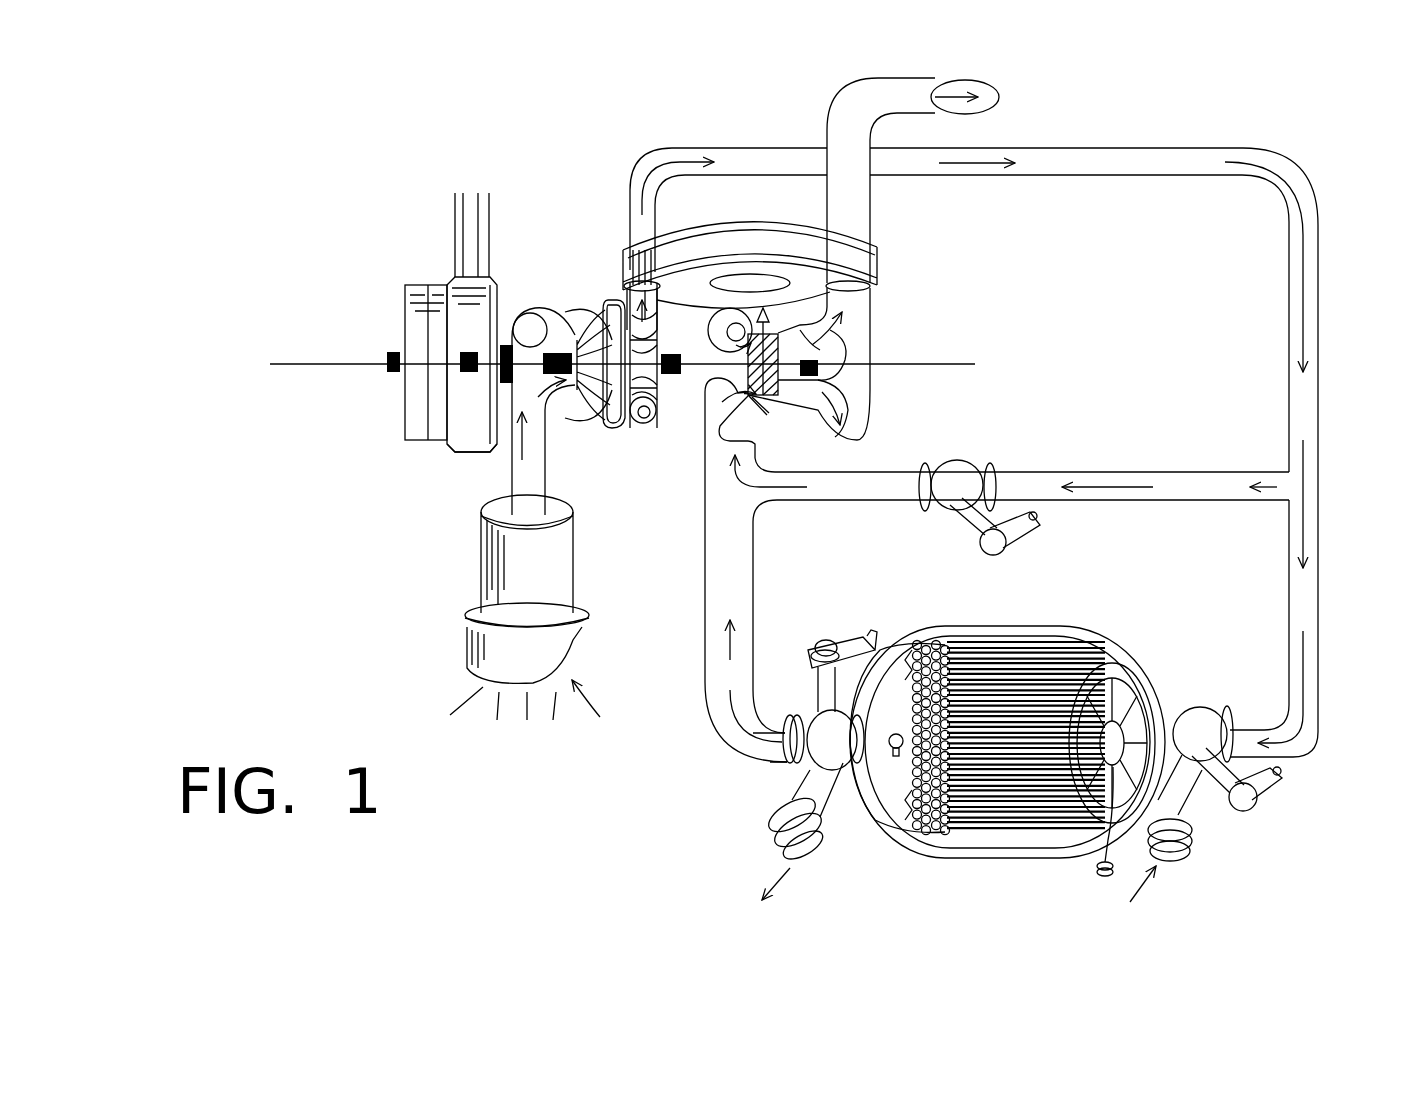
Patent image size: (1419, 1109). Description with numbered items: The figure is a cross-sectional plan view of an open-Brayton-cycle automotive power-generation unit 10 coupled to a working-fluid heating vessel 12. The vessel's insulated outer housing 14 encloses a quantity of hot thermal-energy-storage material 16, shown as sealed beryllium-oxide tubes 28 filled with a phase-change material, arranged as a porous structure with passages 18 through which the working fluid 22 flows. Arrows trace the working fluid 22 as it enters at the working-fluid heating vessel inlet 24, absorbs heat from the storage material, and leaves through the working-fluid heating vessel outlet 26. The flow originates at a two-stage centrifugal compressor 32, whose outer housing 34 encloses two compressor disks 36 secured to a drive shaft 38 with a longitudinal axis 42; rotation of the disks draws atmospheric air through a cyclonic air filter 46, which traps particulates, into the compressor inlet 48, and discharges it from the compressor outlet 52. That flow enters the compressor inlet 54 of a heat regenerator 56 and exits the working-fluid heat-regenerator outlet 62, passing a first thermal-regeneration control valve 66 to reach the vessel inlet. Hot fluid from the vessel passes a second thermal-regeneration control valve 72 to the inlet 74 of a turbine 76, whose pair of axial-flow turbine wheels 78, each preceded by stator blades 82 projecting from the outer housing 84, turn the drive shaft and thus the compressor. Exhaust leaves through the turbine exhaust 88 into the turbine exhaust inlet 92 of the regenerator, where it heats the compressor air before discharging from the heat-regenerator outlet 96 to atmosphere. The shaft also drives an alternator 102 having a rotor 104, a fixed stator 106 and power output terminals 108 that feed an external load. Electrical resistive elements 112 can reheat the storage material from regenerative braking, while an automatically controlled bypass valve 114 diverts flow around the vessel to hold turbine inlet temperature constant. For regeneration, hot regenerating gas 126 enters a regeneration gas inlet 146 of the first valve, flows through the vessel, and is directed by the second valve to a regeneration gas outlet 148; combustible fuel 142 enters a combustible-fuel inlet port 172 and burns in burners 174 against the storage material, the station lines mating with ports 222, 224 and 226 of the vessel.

The automotive power-generation unit 10 is at (553, 190).
The working-fluid heating vessel 12 is at (978, 625).
The insulated outer housing 14 is at (1010, 626).
The thermal-energy-storage material 16 is at (1030, 665).
The passages 18 is at (943, 833).
The working fluid 22 is at (645, 228).
The working-fluid heating vessel inlet 24 is at (1310, 743).
The working-fluid heating vessel outlet 26 is at (707, 713).
The beryllium-oxide tubes 28 is at (1002, 827).
The two-stage centrifugal compressor 32 is at (579, 342).
The outer housing 34 is at (518, 315).
The compressor disks 36 is at (597, 395).
The drive shaft 38 is at (672, 370).
The longitudinal axis 42 is at (347, 360).
The cyclonic air filter 46 is at (555, 588).
The compressor inlet 48 is at (538, 312).
The compressor outlet 52 is at (657, 320).
The compressor inlet of heat regenerator 54 is at (655, 305).
The heat regenerator 56 is at (745, 228).
The working-fluid heat-regenerator outlet 62 is at (630, 248).
The first thermal-regeneration control valve 66 is at (1198, 718).
The second thermal-regeneration control valve 72 is at (818, 712).
The turbine inlet 74 is at (712, 416).
The turbine 76 is at (815, 322).
The axial-flow turbine wheels 78 is at (768, 341).
The stator blades 82 is at (758, 407).
The outer housing of turbine 84 is at (823, 413).
The turbine exhaust 88 is at (876, 319).
The turbine exhaust inlet 92 is at (876, 286).
The heat-regenerator outlet 96 is at (872, 226).
The alternator 102 is at (447, 285).
The rotor 104 is at (418, 288).
The stator 106 is at (462, 450).
The power output terminals 108 is at (482, 193).
The electrical resistive elements 112 is at (897, 737).
The bypass valve 114 is at (957, 462).
The regenerating gas 126 is at (978, 894).
The combustible fuel 142 is at (1097, 882).
The regeneration gas inlet 146 is at (1196, 804).
The regeneration gas outlet 148 is at (800, 773).
The combustible-fuel inlet port 172 is at (1097, 867).
The burners 174 is at (1135, 683).
The port 222 is at (1188, 842).
The port 224 is at (775, 845).
The port 226 is at (1105, 876).